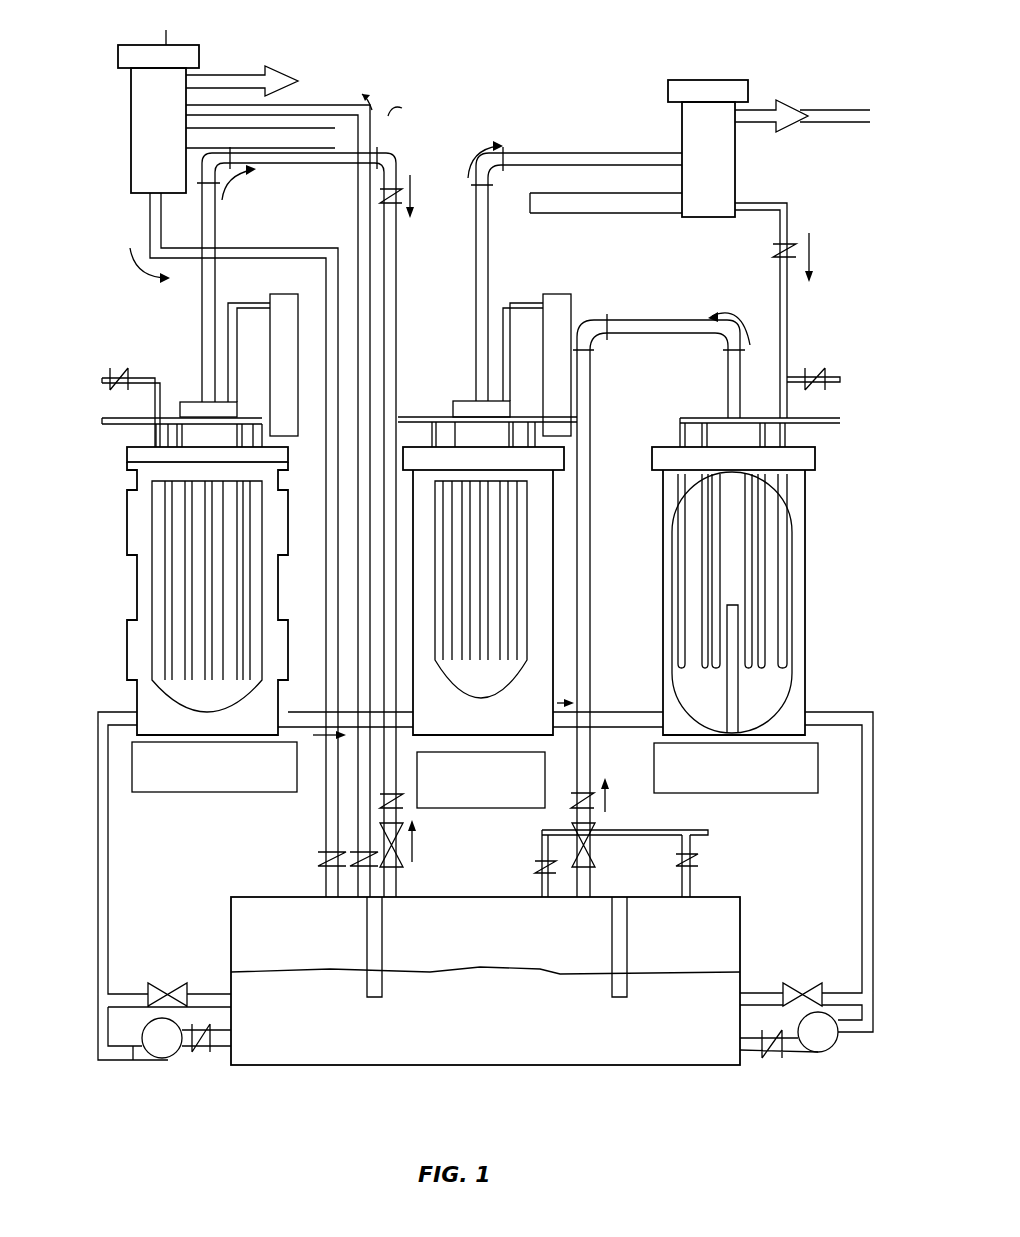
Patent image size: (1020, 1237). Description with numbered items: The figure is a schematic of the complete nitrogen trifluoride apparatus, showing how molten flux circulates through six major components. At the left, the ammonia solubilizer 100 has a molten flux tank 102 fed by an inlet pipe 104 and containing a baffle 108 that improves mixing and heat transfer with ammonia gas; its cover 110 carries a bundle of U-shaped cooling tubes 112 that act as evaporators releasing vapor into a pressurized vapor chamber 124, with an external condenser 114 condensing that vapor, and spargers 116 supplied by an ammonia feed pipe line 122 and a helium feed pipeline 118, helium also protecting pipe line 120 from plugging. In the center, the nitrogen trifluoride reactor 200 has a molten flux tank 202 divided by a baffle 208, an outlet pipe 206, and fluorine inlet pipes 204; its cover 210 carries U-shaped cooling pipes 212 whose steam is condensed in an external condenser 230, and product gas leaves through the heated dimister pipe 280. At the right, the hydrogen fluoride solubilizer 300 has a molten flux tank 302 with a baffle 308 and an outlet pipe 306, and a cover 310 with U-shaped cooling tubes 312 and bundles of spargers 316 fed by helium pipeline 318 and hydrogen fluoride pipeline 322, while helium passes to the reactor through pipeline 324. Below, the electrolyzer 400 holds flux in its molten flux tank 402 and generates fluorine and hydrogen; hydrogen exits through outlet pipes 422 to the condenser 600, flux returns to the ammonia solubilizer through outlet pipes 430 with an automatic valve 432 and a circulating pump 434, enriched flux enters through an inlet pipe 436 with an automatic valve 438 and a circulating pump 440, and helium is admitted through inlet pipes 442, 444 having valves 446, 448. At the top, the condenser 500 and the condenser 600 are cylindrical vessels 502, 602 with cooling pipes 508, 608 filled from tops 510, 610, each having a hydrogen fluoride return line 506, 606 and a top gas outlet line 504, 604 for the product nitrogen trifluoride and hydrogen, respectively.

The ammonia solubilizer 100 is at (194, 566).
The molten flux tank 102 is at (265, 703).
The inlet pipe 104 is at (98, 782).
The baffle 108 is at (128, 680).
The cover 110 is at (130, 448).
The U-shaped cooling tubes 112 is at (197, 402).
The external condenser 114 is at (290, 294).
The spargers 116 is at (192, 632).
The helium gas feed pipeline 118 is at (105, 397).
The pipe line 120 is at (322, 167).
The ammonia gas feed pipe line 122 is at (123, 418).
The vapor chamber 124 is at (183, 408).
The nitrogen trifluoride reactor 200 is at (521, 612).
The molten flux tank 202 is at (505, 688).
The inlet pipes 204 is at (590, 522).
The outlet pipe 206 is at (653, 707).
The baffle 208 is at (505, 628).
The cover 210 is at (590, 432).
The U-shaped cooling pipes 212 is at (470, 401).
The external condenser 230 is at (568, 290).
The dimister pipe 280 is at (558, 150).
The hydrogen fluoride solubilizer 300 is at (764, 605).
The molten flux tank 302 is at (793, 650).
The outlet pipe 306 is at (868, 846).
The baffle 308 is at (738, 620).
The cover 310 is at (815, 453).
The U-shaped cooling tubes 312 is at (738, 538).
The bundles of spargers 316 is at (783, 572).
The pipeline 318 is at (831, 386).
The pipeline 322 is at (838, 424).
The pipeline 324 is at (692, 338).
The electrolyzer 400 is at (485, 1003).
The molten flux tank 402 is at (262, 1050).
The outlet pipes 422 is at (362, 95).
The outlet pipes 430 is at (215, 1047).
The automatic valve 432 is at (155, 993).
The circulating pump 434 is at (172, 1048).
The inlet pipe 436 is at (752, 1033).
The automatic valve 438 is at (793, 993).
The circulating pump 440 is at (827, 1035).
The inlet pipe 442 is at (538, 880).
The inlet pipe 444 is at (694, 884).
The valve 446 is at (538, 853).
The valve 448 is at (693, 858).
The nitrogen trifluoride and hydrogen fluoride condenser 500 is at (718, 131).
The cylindrical vessel 502 is at (736, 178).
The top gas outlet line 504 is at (735, 92).
The hydrogen fluoride return line 506 is at (793, 305).
The cooling pipes 508 is at (682, 128).
The top 510 is at (693, 80).
The hydrogen and hydrogen fluoride condenser 600 is at (153, 40).
The cylindrical vessel 602 is at (131, 148).
The top gas outlet line 604 is at (225, 72).
The hydrogen fluoride return line 606 is at (148, 238).
The cooling pipes 608 is at (168, 106).
The top 610 is at (166, 30).